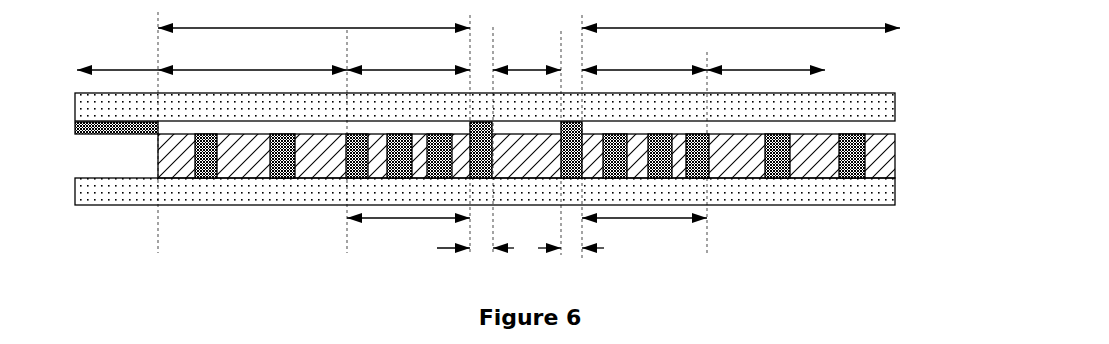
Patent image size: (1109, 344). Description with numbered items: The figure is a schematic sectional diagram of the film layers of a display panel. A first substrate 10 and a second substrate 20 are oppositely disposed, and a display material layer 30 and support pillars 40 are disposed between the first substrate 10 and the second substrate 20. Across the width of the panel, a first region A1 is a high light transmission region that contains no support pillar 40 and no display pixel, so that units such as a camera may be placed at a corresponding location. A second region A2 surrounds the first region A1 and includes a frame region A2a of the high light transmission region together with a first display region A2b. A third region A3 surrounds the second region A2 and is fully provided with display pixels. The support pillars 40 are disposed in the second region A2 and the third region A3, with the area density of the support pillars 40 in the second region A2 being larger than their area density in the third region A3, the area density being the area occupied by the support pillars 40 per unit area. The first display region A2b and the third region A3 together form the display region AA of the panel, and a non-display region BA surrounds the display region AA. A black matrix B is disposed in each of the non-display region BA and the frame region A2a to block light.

The first substrate 10 is at (895, 190).
The second substrate 20 is at (895, 108).
The display material layer 30 is at (895, 153).
The support pillars 40 is at (207, 178).
The black matrix B is at (87, 135).
The display region AA is at (529, 15).
The non-display region BA is at (113, 53).
The first region A1 is at (527, 79).
The second region A2 is at (527, 79).
The third region A3 is at (491, 66).
The frame region A2a is at (520, 265).
The first display region A2b is at (527, 229).